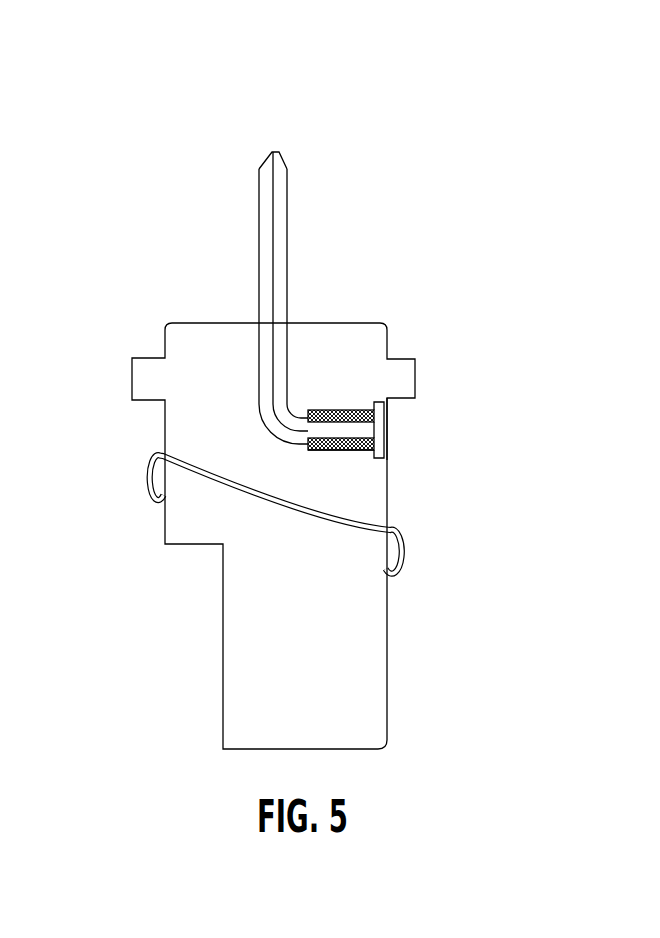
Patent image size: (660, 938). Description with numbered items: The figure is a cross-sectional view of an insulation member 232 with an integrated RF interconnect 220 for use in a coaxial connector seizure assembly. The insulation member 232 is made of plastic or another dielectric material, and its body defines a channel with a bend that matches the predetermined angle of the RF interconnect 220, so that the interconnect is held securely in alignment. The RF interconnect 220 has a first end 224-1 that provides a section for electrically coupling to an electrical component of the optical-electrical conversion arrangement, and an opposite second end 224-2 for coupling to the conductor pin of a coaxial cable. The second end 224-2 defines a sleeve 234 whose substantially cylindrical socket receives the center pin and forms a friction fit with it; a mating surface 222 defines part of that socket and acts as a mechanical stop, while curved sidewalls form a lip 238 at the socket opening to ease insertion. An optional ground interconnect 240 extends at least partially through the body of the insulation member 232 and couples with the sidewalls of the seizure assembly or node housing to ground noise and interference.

The RF interconnect 220 is at (329, 262).
The mating surface 222 is at (418, 417).
The first end 224-1 is at (276, 160).
The second end 224-2 is at (403, 415).
The insulation member 232 is at (185, 303).
The sleeve 234 is at (343, 459).
The lip 238 is at (393, 433).
The ground interconnect 240 is at (152, 452).